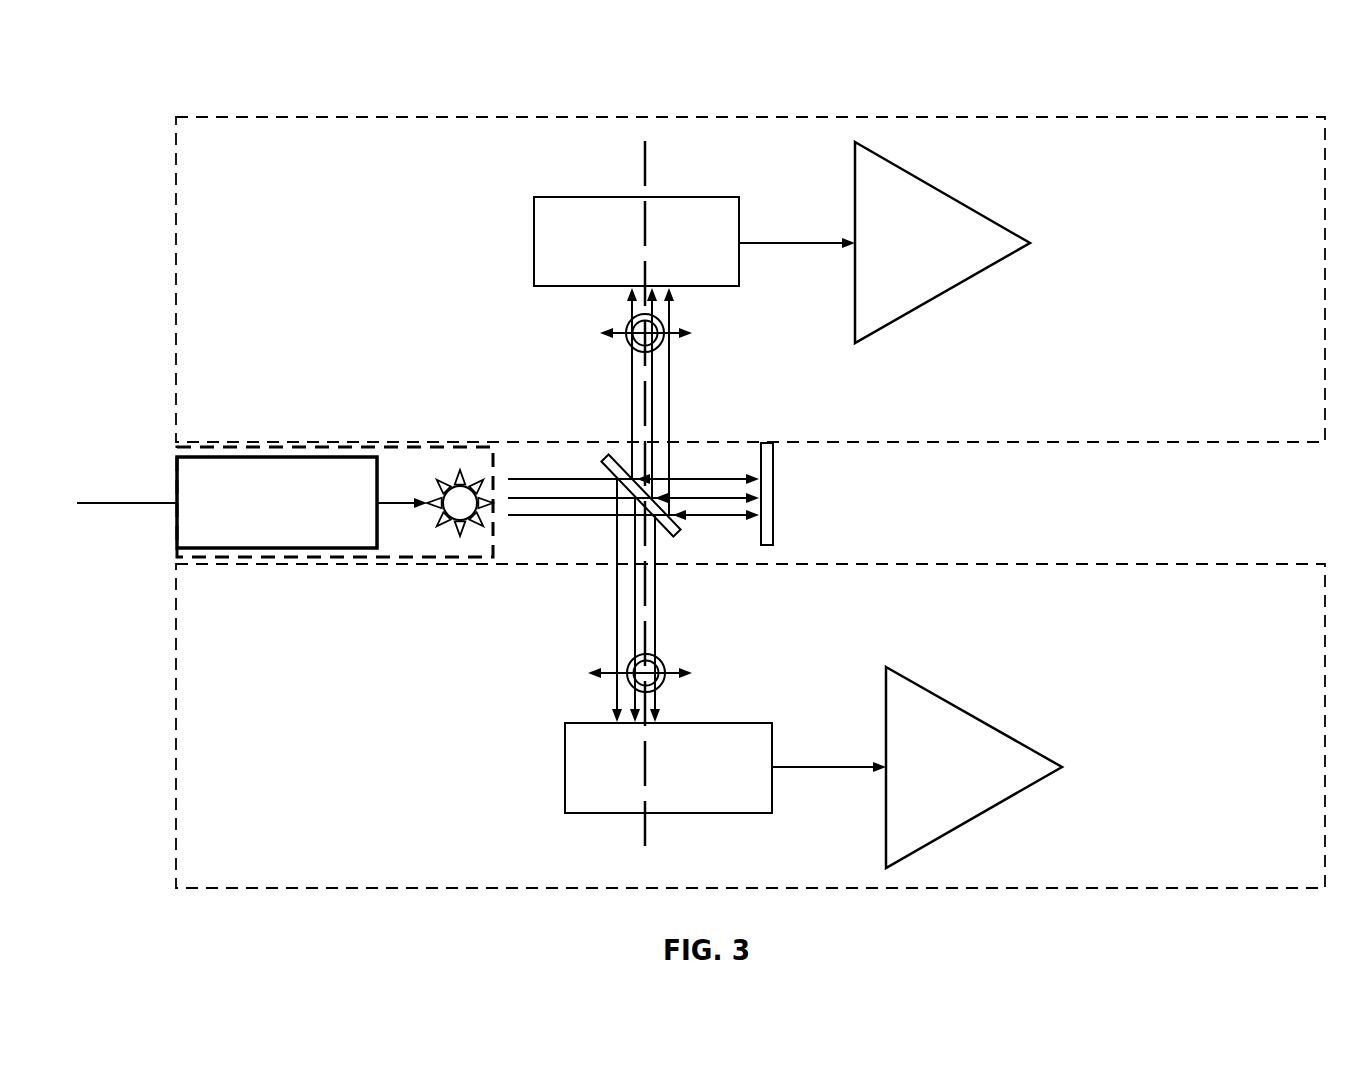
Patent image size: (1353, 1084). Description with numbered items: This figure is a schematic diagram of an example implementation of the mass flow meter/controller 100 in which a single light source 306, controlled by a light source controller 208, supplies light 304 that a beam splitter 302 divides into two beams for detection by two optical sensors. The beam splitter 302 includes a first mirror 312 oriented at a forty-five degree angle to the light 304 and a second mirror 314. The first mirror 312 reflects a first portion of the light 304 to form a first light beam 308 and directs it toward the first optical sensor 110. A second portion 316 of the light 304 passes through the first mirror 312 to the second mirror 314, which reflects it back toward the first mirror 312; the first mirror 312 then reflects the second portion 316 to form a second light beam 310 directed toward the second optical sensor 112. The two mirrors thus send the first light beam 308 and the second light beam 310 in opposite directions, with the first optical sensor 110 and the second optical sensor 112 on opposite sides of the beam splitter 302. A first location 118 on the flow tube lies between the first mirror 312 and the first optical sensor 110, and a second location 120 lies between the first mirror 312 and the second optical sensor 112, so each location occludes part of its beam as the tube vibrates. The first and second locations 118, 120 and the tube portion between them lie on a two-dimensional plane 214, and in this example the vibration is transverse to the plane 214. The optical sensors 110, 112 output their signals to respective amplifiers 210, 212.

The mass flow meter/controller 100 is at (200, 76).
The first optical sensor 110 is at (565, 768).
The second optical sensor 112 is at (534, 238).
The first location 118 is at (660, 688).
The second location 120 is at (663, 323).
The light source controller 208 is at (177, 477).
The amplifier 210 is at (973, 715).
The amplifier 212 is at (942, 188).
The two-dimensional plane 214 is at (643, 163).
The beam splitter 302 is at (812, 522).
The light 304 is at (538, 466).
The light source 306 is at (453, 470).
The first light beam 308 is at (606, 616).
The second light beam 310 is at (603, 369).
The first mirror 312 is at (612, 457).
The second mirror 314 is at (773, 495).
The second portion 316 is at (711, 466).